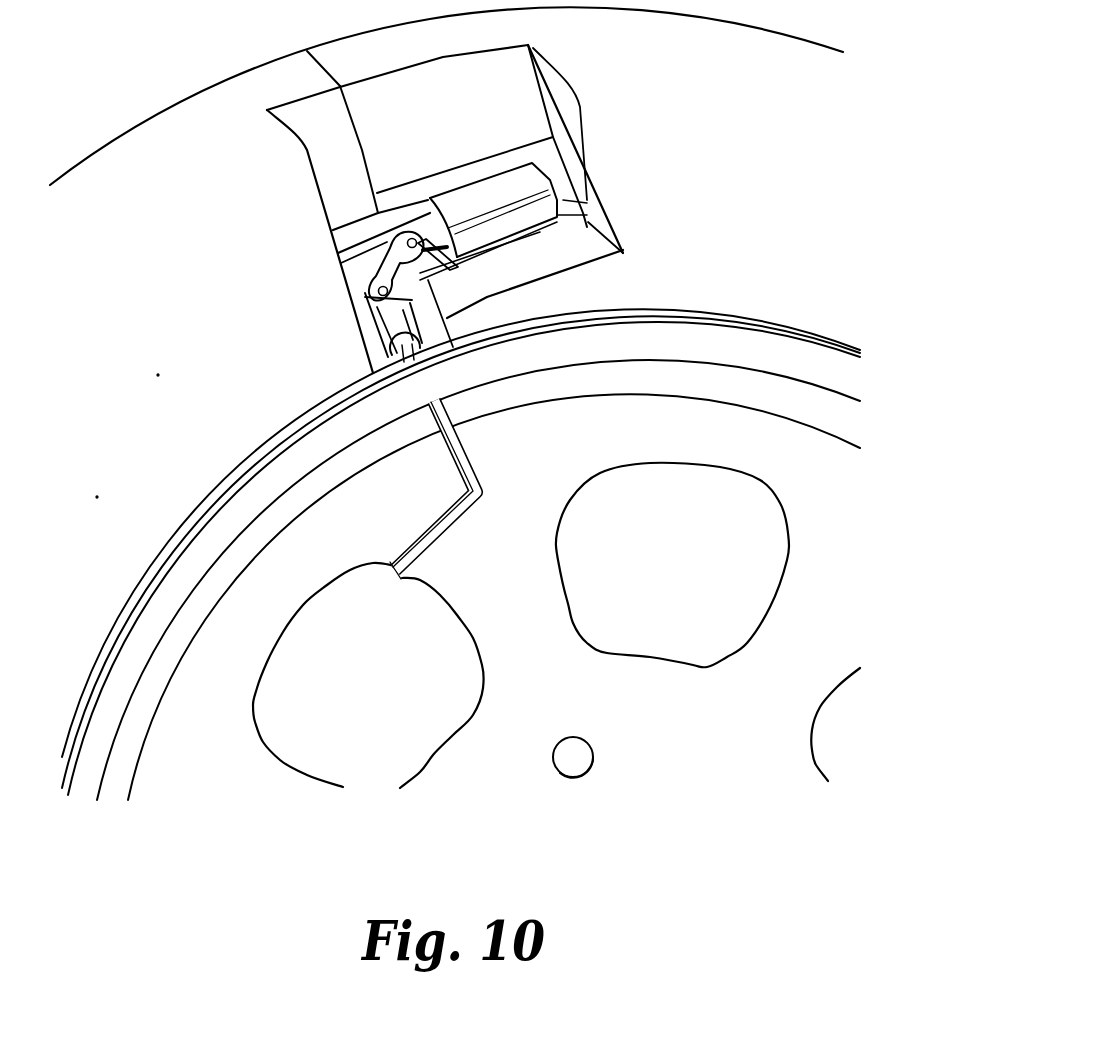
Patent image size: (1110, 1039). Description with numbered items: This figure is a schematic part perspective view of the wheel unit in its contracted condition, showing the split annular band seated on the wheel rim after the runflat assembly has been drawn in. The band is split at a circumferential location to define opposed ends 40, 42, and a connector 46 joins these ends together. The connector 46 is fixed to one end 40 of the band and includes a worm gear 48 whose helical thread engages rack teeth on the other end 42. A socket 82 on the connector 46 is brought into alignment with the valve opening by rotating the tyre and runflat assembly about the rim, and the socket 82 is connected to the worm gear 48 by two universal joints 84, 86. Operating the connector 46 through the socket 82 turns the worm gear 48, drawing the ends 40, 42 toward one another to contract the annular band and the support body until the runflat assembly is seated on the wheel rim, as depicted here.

The opposed end 40 is at (570, 192).
The opposed end 42 is at (412, 216).
The connector 46 is at (492, 187).
The worm gear 48 is at (465, 251).
The socket 82 is at (393, 345).
The universal joint 84 is at (375, 290).
The universal joint 86 is at (445, 262).